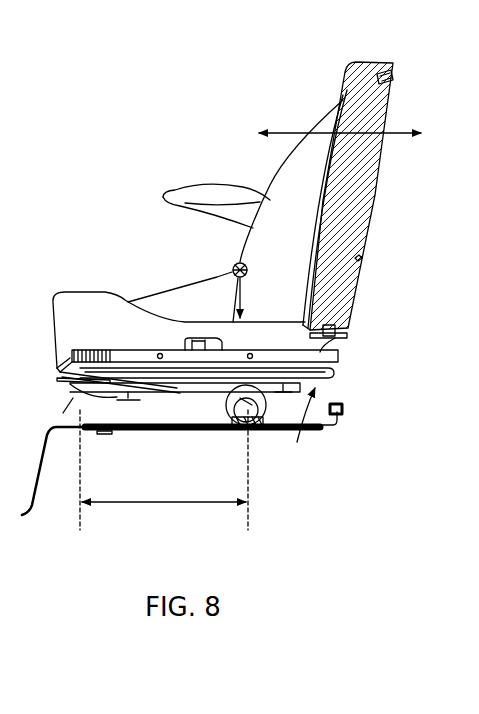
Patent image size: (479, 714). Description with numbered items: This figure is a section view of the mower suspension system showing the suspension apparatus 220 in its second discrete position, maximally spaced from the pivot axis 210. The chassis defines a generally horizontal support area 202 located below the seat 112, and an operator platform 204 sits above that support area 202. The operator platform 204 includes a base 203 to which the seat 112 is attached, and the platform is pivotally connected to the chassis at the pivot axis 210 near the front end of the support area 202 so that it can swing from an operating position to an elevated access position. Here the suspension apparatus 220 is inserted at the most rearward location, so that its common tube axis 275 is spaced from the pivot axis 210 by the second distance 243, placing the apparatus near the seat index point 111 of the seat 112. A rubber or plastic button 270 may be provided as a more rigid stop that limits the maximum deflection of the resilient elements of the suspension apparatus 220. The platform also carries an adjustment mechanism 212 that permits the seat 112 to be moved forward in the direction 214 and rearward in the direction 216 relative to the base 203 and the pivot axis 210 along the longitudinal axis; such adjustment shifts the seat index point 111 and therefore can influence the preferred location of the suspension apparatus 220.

The seat 112 is at (349, 72).
The forward direction 214 is at (284, 131).
The rearward direction 216 is at (402, 131).
The seat index point (SIP) 111 is at (232, 266).
The adjustment mechanism 212 is at (183, 350).
The pivot axis 210 is at (72, 345).
The tube axis 275 is at (228, 404).
The base 203 is at (328, 381).
The button 270 is at (337, 412).
The operator platform 204 is at (299, 425).
The suspension apparatus 220 is at (268, 424).
The support area 202 is at (50, 438).
The second distance 243 is at (168, 505).